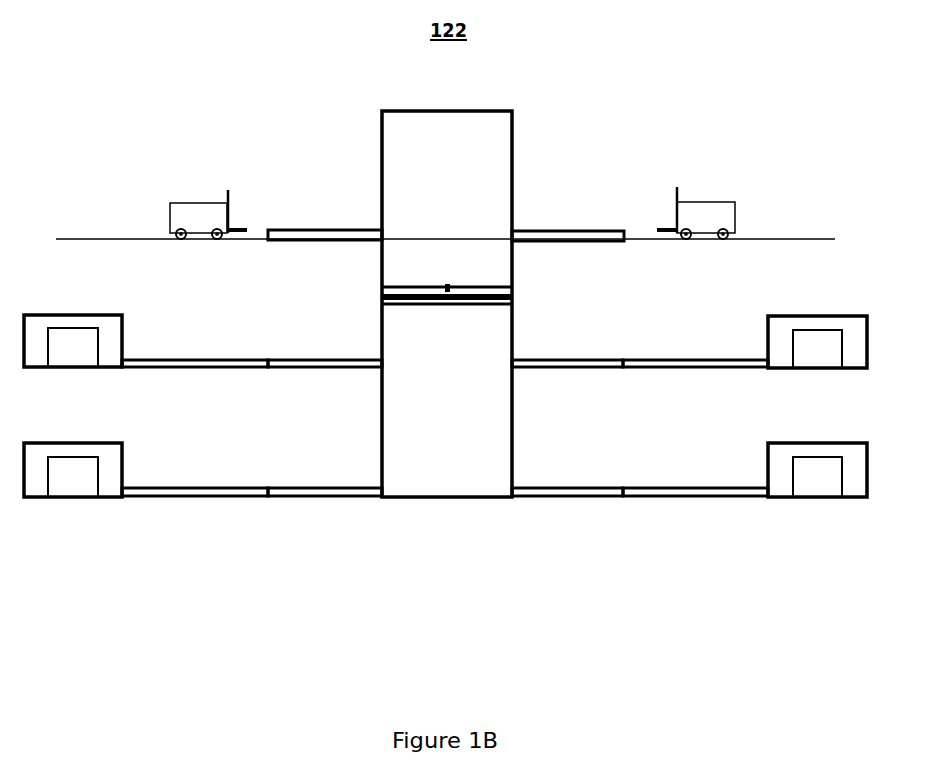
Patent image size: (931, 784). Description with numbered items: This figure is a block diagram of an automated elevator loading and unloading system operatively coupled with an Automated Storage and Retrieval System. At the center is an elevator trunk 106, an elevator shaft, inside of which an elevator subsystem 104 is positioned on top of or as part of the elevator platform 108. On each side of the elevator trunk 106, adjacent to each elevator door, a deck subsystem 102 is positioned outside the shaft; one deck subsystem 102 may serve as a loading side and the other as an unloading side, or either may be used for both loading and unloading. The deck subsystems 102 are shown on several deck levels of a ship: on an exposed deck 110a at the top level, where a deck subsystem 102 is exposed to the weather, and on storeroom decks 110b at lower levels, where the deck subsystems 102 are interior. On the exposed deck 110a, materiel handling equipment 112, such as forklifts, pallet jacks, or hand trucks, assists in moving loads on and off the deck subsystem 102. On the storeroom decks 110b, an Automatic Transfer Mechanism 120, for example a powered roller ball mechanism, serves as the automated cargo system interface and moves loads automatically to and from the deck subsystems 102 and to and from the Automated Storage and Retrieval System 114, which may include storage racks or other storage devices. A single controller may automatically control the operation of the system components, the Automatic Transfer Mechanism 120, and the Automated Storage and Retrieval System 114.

The elevator trunk 106 is at (458, 290).
The elevator subsystem 104 is at (472, 280).
The elevator platform 108 is at (447, 318).
The deck subsystem 102 is at (446, 349).
The exposed deck 110a is at (485, 252).
The storeroom deck 110b is at (445, 441).
The materiel handling equipment 112 is at (455, 226).
The Automated Storage and Retrieval System 114 is at (445, 392).
The Automatic Transfer Mechanism 120 is at (445, 425).